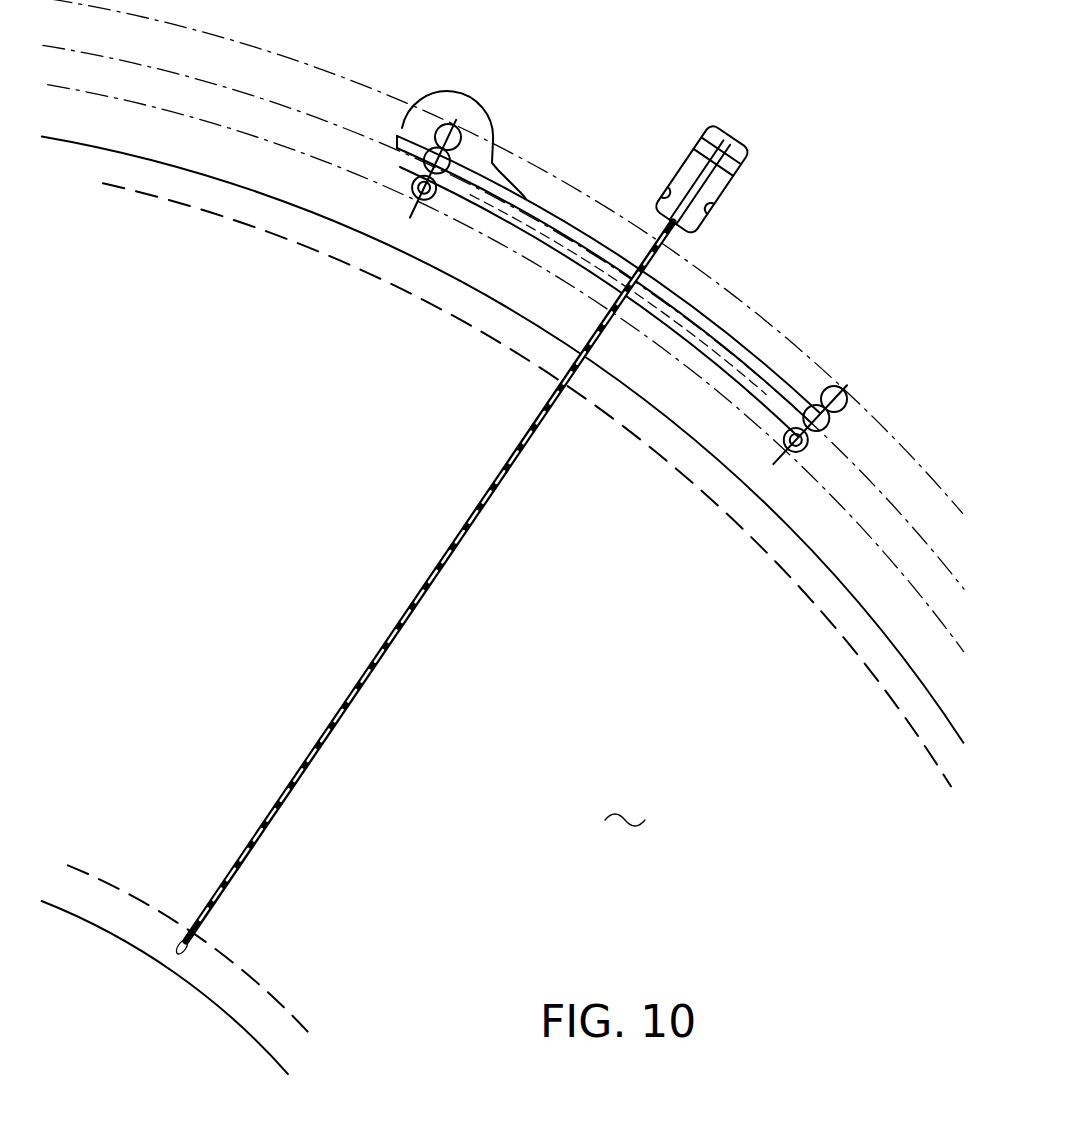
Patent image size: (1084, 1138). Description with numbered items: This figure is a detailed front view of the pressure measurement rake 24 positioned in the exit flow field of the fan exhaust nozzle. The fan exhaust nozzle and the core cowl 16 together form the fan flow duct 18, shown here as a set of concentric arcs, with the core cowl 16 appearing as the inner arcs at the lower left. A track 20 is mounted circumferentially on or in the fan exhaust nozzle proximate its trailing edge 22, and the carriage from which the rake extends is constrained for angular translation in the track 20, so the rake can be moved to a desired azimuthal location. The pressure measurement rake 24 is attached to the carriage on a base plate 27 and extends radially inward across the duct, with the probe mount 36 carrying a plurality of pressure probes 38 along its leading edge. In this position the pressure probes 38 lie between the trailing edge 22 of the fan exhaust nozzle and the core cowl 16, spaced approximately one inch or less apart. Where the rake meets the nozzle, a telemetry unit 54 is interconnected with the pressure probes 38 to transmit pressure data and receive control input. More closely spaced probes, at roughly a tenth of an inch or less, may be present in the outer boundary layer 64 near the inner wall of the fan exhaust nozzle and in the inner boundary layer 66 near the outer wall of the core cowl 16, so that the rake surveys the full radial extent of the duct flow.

The core cowl 16 is at (240, 1023).
The fan flow duct 18 is at (625, 804).
The track 20 is at (812, 347).
The trailing edge 22 is at (822, 563).
The pressure measurement rake 24 is at (541, 506).
The base plate 27 is at (728, 342).
The probe mount 36 is at (358, 692).
The pressure probes 38 is at (378, 660).
The telemetry unit 54 is at (727, 122).
The outer boundary layer 64 is at (642, 420).
The inner boundary layer 66 is at (128, 920).